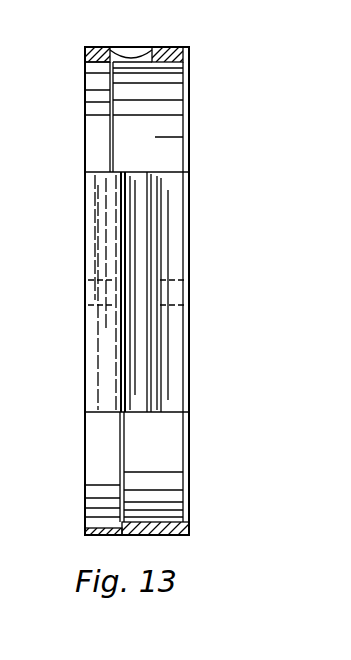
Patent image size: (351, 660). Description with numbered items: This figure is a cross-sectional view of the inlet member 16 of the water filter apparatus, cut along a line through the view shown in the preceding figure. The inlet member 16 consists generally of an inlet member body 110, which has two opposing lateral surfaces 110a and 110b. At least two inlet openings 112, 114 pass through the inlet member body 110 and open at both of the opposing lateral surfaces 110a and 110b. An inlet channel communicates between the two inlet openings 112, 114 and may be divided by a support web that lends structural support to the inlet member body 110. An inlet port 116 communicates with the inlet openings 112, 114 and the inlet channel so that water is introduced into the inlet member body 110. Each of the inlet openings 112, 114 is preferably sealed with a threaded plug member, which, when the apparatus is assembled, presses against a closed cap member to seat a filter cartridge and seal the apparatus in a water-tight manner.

The inlet member 16 is at (245, 204).
The inlet member body 110 is at (150, 440).
The lateral surface 110a is at (232, 490).
The lateral surface 110b is at (85, 504).
The inlet opening 112 is at (100, 393).
The inlet opening 114 is at (102, 158).
The inlet port 116 is at (146, 58).